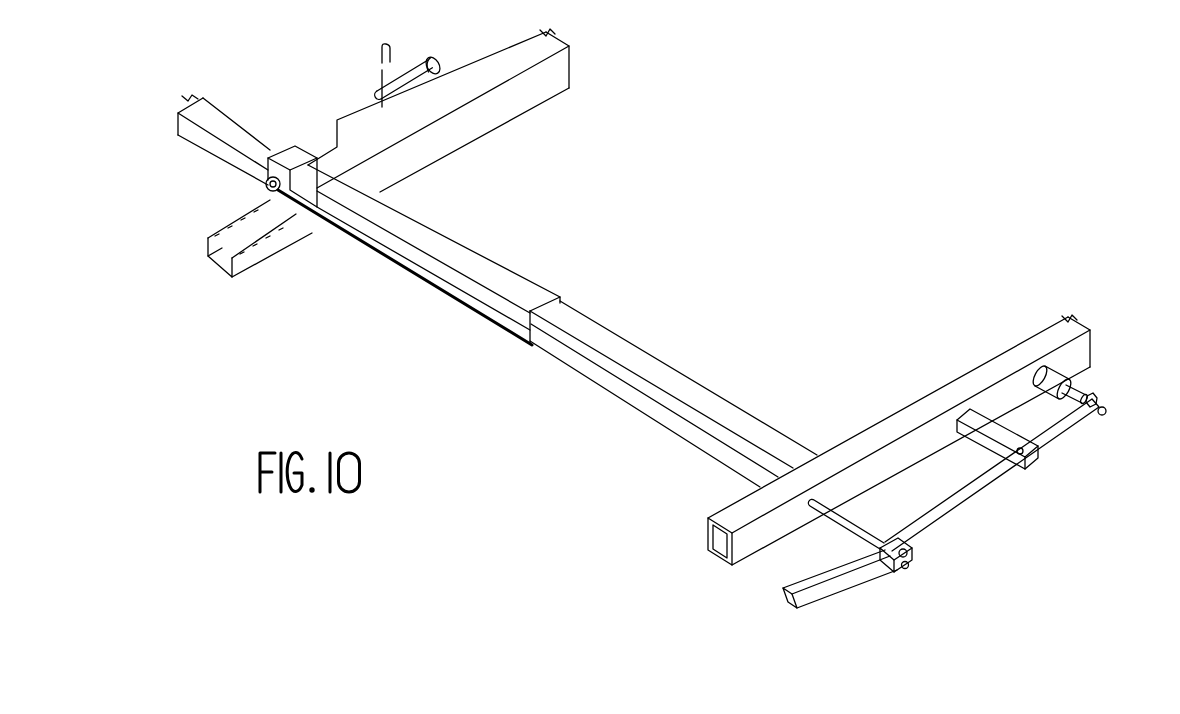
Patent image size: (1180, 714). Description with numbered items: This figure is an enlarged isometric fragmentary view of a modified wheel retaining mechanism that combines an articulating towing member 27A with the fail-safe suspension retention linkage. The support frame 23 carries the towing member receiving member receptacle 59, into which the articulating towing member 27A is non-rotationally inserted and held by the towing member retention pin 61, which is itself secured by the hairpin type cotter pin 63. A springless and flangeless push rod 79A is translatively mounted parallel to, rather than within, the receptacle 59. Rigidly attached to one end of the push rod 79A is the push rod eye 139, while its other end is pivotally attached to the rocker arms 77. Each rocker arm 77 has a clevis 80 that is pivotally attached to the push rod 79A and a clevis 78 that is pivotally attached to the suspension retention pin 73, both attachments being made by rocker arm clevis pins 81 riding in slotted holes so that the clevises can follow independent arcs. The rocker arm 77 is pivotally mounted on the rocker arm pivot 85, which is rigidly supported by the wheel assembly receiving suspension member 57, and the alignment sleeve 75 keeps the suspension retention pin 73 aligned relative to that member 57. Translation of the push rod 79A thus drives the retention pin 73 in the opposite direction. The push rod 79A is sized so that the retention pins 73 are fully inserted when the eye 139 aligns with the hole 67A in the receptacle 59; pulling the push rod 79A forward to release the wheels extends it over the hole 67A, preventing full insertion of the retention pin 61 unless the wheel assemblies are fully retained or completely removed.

The support frame 23 is at (507, 134).
The articulating towing member 27A is at (234, 126).
The push rod eye 139 is at (266, 186).
The hole in towing member receiving member receptacle 67A is at (262, 199).
The towing member receiving member receptacle 59 is at (435, 238).
The push rod 79A is at (390, 254).
The wheel assembly receiving suspension member 57 is at (1037, 335).
The rocker arm 77 is at (967, 507).
The clevis 80 is at (900, 565).
The rocker arm clevis pin 81 is at (917, 547).
The rocker arm pivot 85 is at (1047, 455).
The alignment sleeve 75 is at (1058, 380).
The suspension retention pin 73 is at (1098, 393).
The clevis 78 is at (1100, 414).
The hairpin type cotter pin 63 is at (393, 42).
The towing member retention pin 61 is at (418, 59).